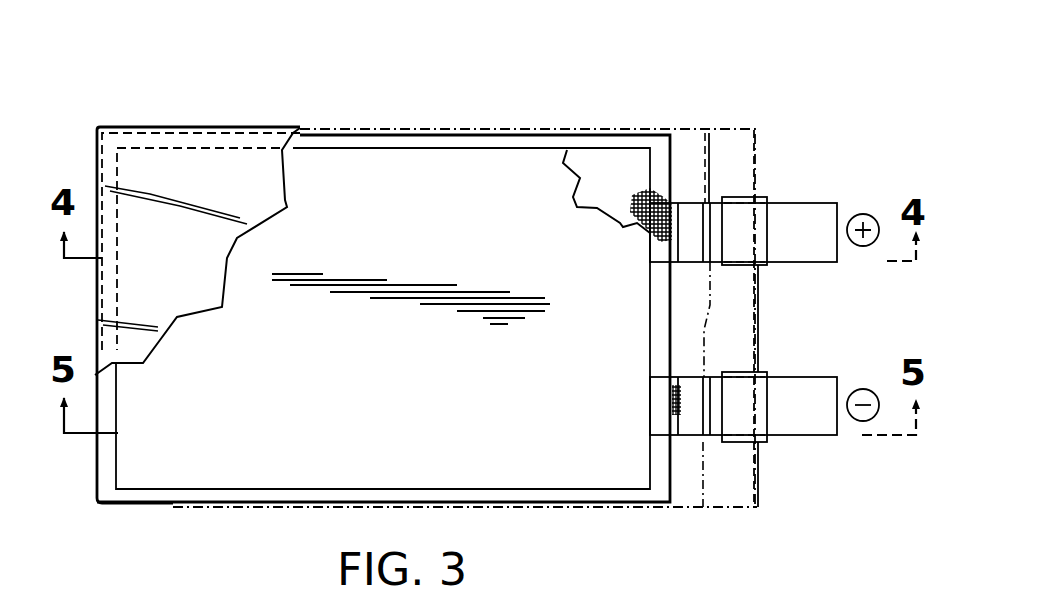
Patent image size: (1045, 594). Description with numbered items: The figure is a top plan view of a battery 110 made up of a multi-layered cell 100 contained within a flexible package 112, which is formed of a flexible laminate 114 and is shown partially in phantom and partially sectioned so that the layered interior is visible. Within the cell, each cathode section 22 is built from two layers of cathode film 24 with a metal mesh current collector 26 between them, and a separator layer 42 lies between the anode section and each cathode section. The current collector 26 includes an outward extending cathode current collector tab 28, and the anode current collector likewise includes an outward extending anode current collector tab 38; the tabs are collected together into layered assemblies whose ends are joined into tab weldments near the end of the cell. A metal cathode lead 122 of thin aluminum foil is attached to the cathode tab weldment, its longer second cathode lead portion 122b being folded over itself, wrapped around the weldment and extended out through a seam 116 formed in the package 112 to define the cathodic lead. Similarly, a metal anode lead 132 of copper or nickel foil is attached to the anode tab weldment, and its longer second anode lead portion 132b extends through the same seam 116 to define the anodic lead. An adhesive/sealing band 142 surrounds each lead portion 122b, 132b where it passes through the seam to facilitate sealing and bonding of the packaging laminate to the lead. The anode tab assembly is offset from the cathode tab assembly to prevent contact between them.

The battery 110 is at (666, 66).
The flexible package 112 is at (185, 126).
The cell 100 is at (491, 129).
The separator layer 42 is at (618, 497).
The seam 116 is at (760, 151).
The cathode section 22 is at (399, 150).
The cathode film layer 24 is at (453, 168).
The flexible laminate 114 is at (257, 166).
The current collector 26 is at (600, 167).
The cathode current collector tab 28 is at (678, 201).
The anode current collector tab 38 is at (679, 438).
The cathode lead 122 is at (807, 201).
The second cathode lead portion 122b is at (690, 212).
The anode lead 132 is at (816, 438).
The second anode lead portion 132b is at (711, 434).
The adhesive/sealing band 142 is at (766, 265).